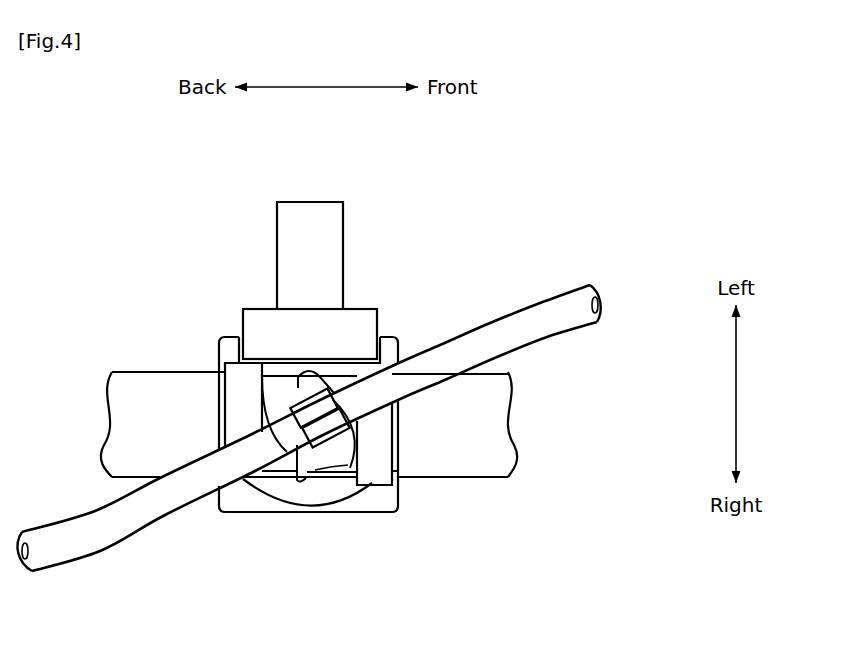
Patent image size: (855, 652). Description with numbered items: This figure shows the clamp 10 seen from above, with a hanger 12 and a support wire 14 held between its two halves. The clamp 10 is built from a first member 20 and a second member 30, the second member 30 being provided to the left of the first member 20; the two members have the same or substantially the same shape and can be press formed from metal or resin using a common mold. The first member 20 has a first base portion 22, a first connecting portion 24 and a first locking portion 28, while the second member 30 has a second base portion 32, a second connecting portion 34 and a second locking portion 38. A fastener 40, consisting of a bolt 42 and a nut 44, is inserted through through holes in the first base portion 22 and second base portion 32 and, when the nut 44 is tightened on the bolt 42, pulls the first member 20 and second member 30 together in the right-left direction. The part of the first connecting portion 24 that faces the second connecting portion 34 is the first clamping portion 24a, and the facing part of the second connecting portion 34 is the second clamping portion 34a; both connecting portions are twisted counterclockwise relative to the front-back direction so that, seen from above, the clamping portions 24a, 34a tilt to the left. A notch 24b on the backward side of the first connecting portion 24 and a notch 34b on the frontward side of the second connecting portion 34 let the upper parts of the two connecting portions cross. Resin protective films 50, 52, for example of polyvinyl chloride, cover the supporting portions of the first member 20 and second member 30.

The clamp 10 is at (232, 200).
The hanger 12 is at (87, 527).
The support wire 14 is at (142, 385).
The first member 20 is at (407, 498).
The first base portion 22 is at (275, 463).
The first connecting portion 24 is at (360, 435).
The first clamping portion 24a is at (306, 466).
The notch 24b is at (325, 450).
The first locking portion 28 is at (235, 407).
The second member 30 is at (408, 335).
The second base portion 32 is at (343, 385).
The second connecting portion 34 is at (280, 400).
The second clamping portion 34a is at (310, 380).
The notch 34b is at (290, 390).
The second locking portion 38 is at (387, 437).
The fastener 40 is at (367, 228).
The bolt 42 is at (310, 212).
The nut 44 is at (272, 385).
The protective film 50 is at (242, 510).
The protective film 52 is at (228, 342).